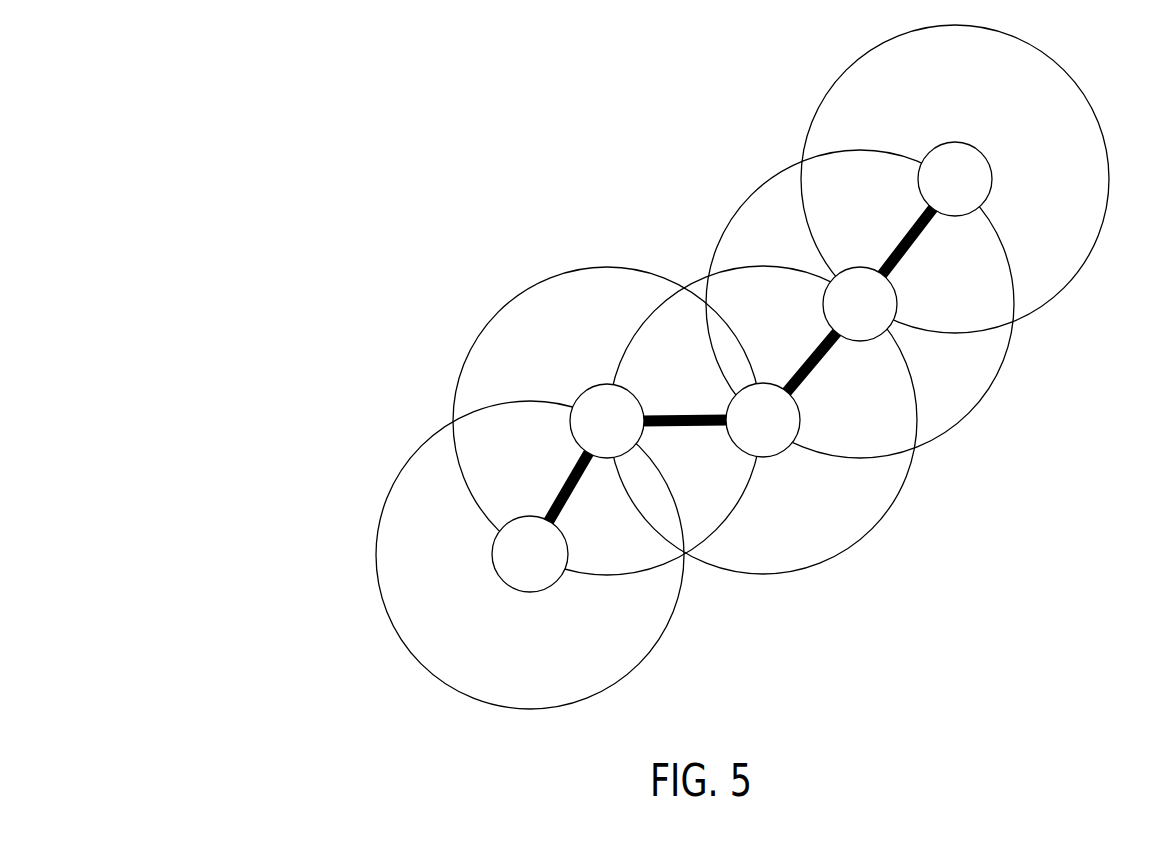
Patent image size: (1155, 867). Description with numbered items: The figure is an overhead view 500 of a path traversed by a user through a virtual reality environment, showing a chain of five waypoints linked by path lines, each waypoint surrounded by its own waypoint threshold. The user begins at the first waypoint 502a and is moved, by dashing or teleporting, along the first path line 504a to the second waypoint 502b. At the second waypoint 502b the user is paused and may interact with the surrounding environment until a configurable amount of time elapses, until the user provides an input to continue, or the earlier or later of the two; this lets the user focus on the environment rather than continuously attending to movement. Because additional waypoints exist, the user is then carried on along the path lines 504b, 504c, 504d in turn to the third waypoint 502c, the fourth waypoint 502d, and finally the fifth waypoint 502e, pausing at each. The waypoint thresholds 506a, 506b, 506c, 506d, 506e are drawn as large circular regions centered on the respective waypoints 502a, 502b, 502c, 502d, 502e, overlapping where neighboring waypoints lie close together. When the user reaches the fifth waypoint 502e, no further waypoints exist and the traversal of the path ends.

The overhead view 500 is at (272, 117).
The first waypoint 502a is at (494, 568).
The second waypoint 502b is at (583, 392).
The third waypoint 502c is at (766, 460).
The fourth waypoint 502d is at (858, 343).
The fifth waypoint 502e is at (995, 177).
The first path line 504a is at (555, 490).
The path line 504b is at (686, 426).
The path line 504c is at (812, 336).
The path line 504d is at (908, 232).
The waypoint threshold 506a is at (377, 540).
The waypoint threshold 506b is at (472, 338).
The waypoint threshold 506c is at (883, 518).
The waypoint threshold 506d is at (735, 217).
The waypoint threshold 506e is at (820, 108).